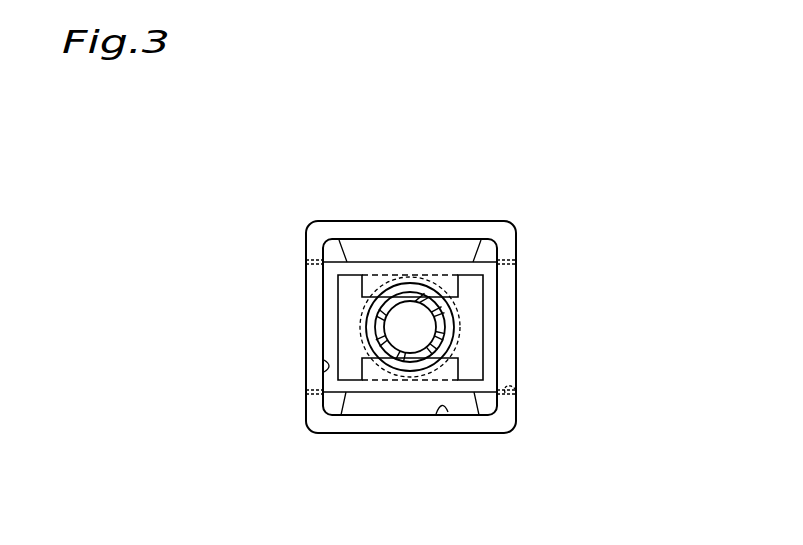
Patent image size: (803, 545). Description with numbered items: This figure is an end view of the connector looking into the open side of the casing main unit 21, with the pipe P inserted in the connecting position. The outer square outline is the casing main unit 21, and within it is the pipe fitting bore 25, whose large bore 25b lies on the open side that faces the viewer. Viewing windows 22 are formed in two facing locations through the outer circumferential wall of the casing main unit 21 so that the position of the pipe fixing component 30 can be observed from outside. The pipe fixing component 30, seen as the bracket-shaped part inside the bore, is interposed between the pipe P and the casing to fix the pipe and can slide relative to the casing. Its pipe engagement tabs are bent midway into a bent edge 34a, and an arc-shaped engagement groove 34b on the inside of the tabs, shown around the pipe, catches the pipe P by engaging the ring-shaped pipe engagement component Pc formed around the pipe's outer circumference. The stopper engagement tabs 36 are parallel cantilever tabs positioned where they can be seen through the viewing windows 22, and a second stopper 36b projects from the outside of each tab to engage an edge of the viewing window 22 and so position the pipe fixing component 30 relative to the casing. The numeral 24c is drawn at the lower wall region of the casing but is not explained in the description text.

The casing main unit 21 is at (472, 221).
The viewing window 22 is at (518, 388).
The recess 24c is at (403, 407).
The pipe fitting bore 25 is at (331, 370).
The large bore 25b is at (448, 412).
The pipe fixing component 30 is at (330, 318).
The bent edge 34a is at (452, 287).
The engagement groove 34b is at (424, 282).
The stopper engagement tab 36 is at (492, 345).
The second stopper 36b is at (503, 363).
The pipe P is at (438, 309).
The pipe engagement component Pc is at (450, 318).